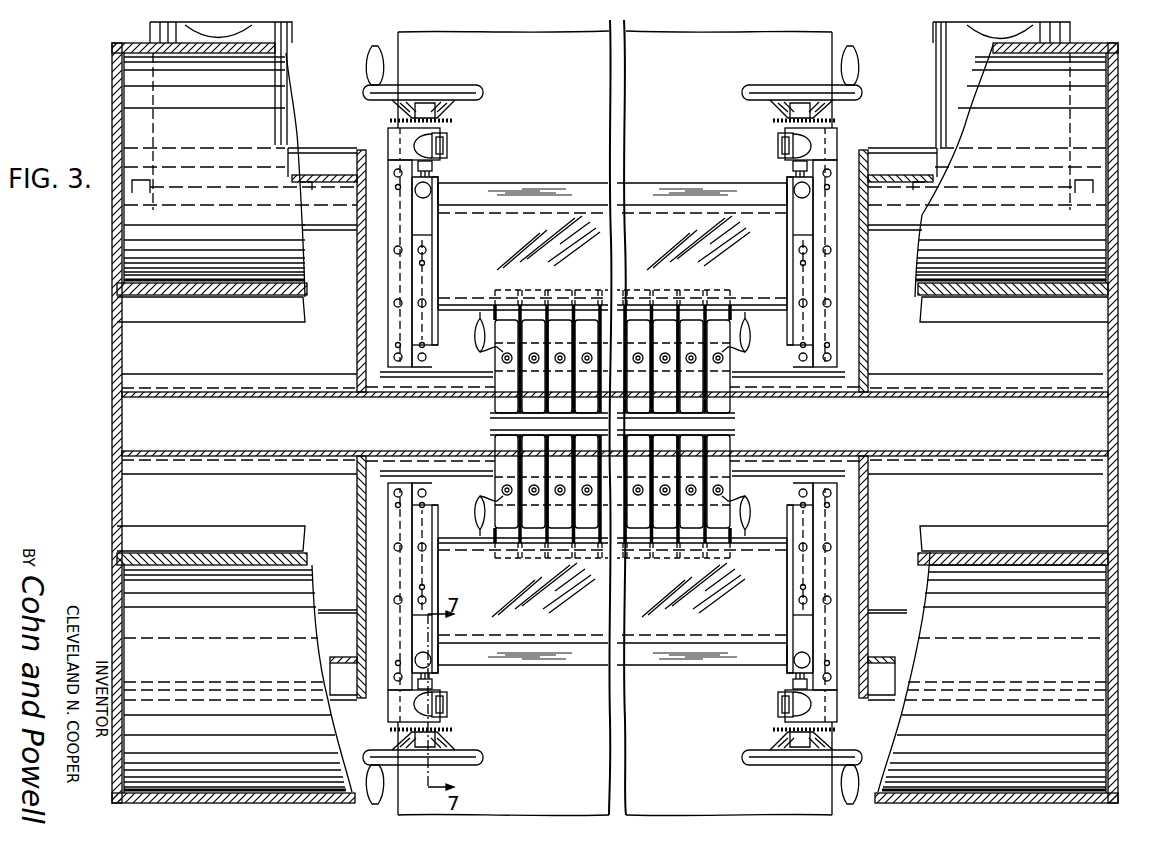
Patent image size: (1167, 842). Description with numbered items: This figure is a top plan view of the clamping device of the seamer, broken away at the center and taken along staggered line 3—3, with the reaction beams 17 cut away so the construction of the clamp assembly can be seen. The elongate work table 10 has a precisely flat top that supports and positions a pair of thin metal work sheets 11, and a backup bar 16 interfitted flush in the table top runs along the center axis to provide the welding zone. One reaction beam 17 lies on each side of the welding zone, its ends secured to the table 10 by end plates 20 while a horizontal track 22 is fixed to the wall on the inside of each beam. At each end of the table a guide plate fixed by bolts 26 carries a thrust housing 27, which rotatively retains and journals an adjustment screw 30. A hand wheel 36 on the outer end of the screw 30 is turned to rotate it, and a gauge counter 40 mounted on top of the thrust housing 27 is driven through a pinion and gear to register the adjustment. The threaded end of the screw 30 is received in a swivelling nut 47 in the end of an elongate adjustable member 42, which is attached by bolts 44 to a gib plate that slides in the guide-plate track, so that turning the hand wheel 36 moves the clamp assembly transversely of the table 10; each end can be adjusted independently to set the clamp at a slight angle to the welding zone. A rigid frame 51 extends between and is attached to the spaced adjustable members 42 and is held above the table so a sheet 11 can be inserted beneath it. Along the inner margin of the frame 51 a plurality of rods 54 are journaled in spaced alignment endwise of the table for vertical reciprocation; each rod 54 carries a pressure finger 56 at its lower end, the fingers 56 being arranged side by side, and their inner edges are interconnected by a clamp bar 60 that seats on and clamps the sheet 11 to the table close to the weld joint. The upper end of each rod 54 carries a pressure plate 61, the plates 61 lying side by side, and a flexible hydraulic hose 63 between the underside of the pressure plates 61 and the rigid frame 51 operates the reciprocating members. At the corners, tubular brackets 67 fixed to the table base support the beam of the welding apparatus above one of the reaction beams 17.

The staggered line 3— 3 is at (782, 169).
The work table 10 is at (298, 149).
The work sheets 11 is at (580, 58).
The backup bar 16 is at (124, 420).
The reaction beams 17 is at (192, 290).
The end plates 20 is at (112, 226).
The horizontal track 22 is at (282, 320).
The bolts 26 is at (394, 304).
The thrust housing 27 is at (388, 132).
The adjustment screw 30 is at (432, 168).
The hand wheel 36 is at (436, 85).
The gauge counter 40 is at (448, 141).
The adjustable member 42 is at (438, 217).
The bolts 44 is at (425, 301).
The nut 47 is at (431, 191).
The rigid frame 51 is at (563, 186).
The rod 54 is at (724, 358).
The pressure finger 56 is at (728, 394).
The clamp bar 60 is at (492, 430).
The pressure plate 61 is at (497, 347).
The flexible hose 63 is at (480, 323).
The tubular bracket 67 is at (290, 42).